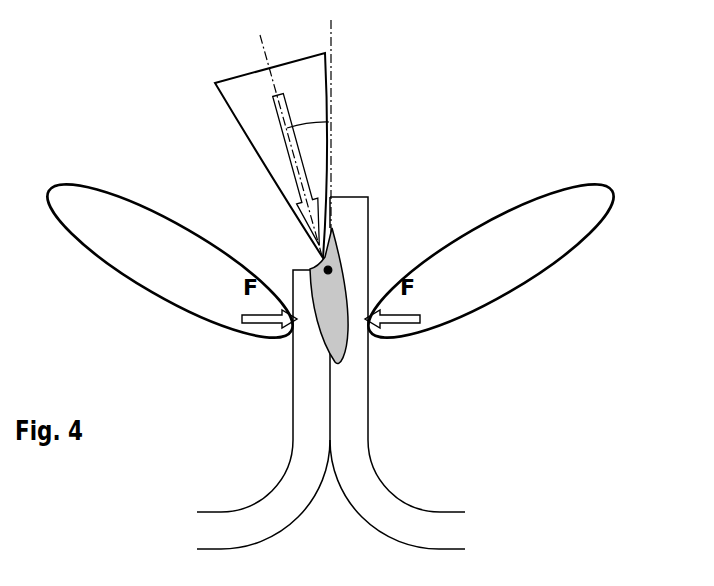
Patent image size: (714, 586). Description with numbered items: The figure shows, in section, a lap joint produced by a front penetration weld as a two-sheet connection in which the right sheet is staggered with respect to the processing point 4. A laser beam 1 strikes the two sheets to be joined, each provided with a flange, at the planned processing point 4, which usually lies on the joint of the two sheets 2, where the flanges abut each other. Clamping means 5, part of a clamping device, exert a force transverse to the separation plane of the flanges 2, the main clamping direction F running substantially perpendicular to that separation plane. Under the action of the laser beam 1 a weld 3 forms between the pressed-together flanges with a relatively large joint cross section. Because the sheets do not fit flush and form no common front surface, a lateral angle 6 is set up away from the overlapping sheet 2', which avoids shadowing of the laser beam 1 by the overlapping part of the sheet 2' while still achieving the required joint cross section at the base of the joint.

The laser beam 1 is at (238, 85).
The sheet 2 is at (236, 409).
The overlapping sheet 2' is at (402, 373).
The weld 3 is at (335, 307).
The processing point 4 is at (324, 267).
The clamping means 5 is at (188, 277).
The lateral angle 6 is at (287, 128).